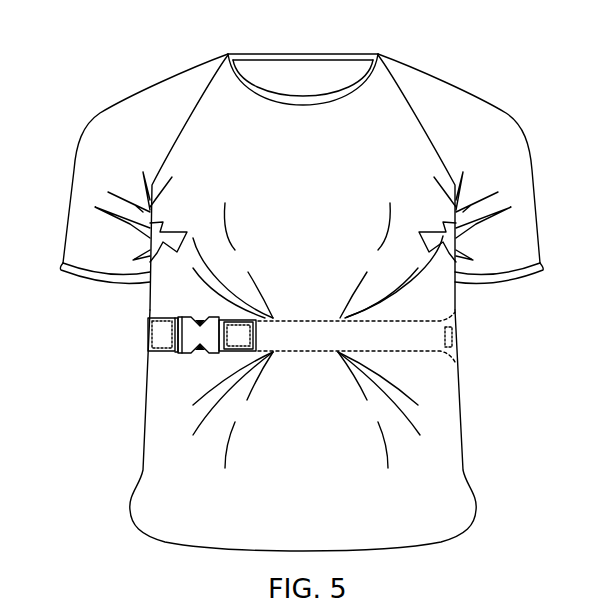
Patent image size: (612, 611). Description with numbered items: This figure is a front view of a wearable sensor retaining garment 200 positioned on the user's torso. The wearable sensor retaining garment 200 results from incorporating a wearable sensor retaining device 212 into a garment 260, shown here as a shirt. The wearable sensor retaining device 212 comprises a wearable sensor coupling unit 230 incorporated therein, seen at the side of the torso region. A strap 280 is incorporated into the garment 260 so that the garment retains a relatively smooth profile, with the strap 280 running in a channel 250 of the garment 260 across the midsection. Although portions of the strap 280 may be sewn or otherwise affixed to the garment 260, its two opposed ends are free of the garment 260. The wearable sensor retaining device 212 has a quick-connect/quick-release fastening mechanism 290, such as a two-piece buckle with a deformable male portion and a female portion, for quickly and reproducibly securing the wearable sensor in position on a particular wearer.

The wearable sensor retaining garment 200 is at (116, 62).
The wearable sensor retaining device 212 is at (462, 316).
The wearable sensor coupling unit 230 is at (453, 335).
The channel 250 is at (390, 338).
The garment 260 is at (431, 508).
The strap 280 is at (150, 340).
The quick-connect/quick-release fastening mechanism 290 is at (183, 353).